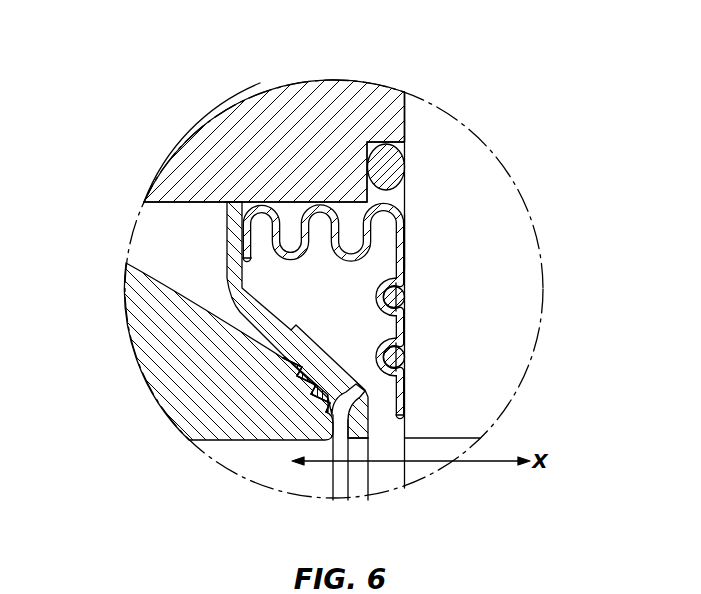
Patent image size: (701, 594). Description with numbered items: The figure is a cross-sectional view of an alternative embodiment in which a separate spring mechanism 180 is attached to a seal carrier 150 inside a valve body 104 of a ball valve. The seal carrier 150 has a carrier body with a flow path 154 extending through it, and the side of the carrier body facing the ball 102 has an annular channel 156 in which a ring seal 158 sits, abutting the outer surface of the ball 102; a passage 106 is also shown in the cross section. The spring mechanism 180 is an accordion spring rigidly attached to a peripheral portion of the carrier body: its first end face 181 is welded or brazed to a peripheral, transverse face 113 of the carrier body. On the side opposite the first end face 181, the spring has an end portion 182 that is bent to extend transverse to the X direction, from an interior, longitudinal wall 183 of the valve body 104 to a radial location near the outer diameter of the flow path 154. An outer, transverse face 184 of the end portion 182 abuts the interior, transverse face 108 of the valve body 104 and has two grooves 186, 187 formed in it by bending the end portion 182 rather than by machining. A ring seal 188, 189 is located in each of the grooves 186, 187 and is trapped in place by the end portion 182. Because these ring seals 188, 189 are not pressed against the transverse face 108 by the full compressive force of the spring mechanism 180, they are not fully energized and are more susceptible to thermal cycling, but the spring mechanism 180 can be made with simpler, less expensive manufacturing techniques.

The ball 102 is at (148, 342).
The valve body 104 is at (317, 97).
The passage 106 is at (307, 483).
The interior, transverse face 108 is at (379, 143).
The peripheral, transverse face 113 is at (232, 109).
The seal carrier 150 is at (214, 240).
The flow path 154 is at (360, 488).
The annular channel 156 is at (285, 378).
The ring seal 158 is at (314, 398).
The spring mechanism 180 is at (288, 207).
The first end face 181 is at (228, 237).
The end portion 182 is at (416, 262).
The interior, longitudinal wall 183 is at (162, 203).
The outer, transverse face 184 is at (405, 407).
The groove 186 is at (407, 287).
The groove 187 is at (405, 357).
The ring seal 188 is at (405, 298).
The ring seal 189 is at (405, 368).